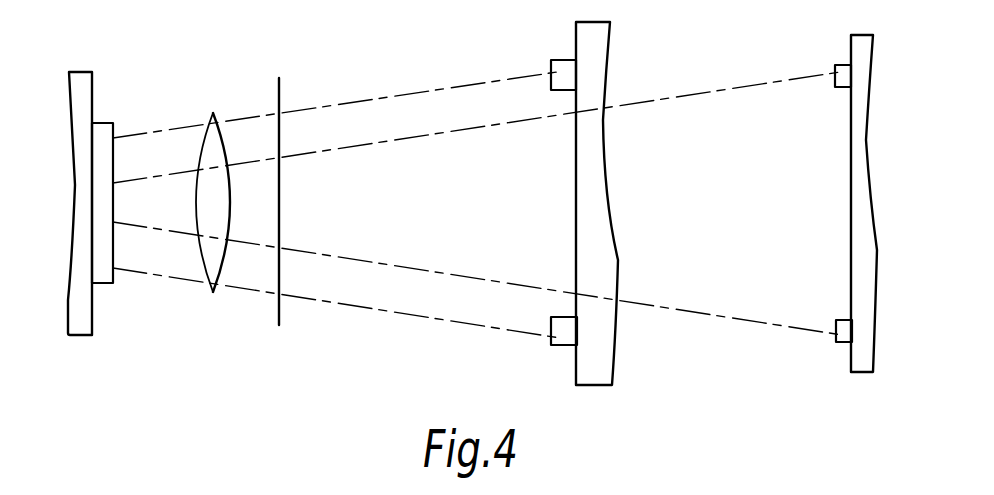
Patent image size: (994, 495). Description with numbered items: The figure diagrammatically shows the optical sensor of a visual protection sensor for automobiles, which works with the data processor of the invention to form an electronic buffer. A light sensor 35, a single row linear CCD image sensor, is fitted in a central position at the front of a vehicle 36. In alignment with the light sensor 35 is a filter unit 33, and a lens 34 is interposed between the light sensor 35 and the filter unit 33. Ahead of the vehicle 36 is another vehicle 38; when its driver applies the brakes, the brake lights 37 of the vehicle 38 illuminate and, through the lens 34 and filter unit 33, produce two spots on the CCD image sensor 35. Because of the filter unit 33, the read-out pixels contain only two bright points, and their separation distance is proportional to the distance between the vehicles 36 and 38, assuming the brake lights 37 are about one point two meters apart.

The filter unit 33 is at (280, 313).
The lens 34 is at (215, 127).
The light sensor 35 is at (112, 128).
The vehicle 36 is at (75, 82).
The brake lights 37 is at (557, 72).
The vehicle 38 is at (600, 370).